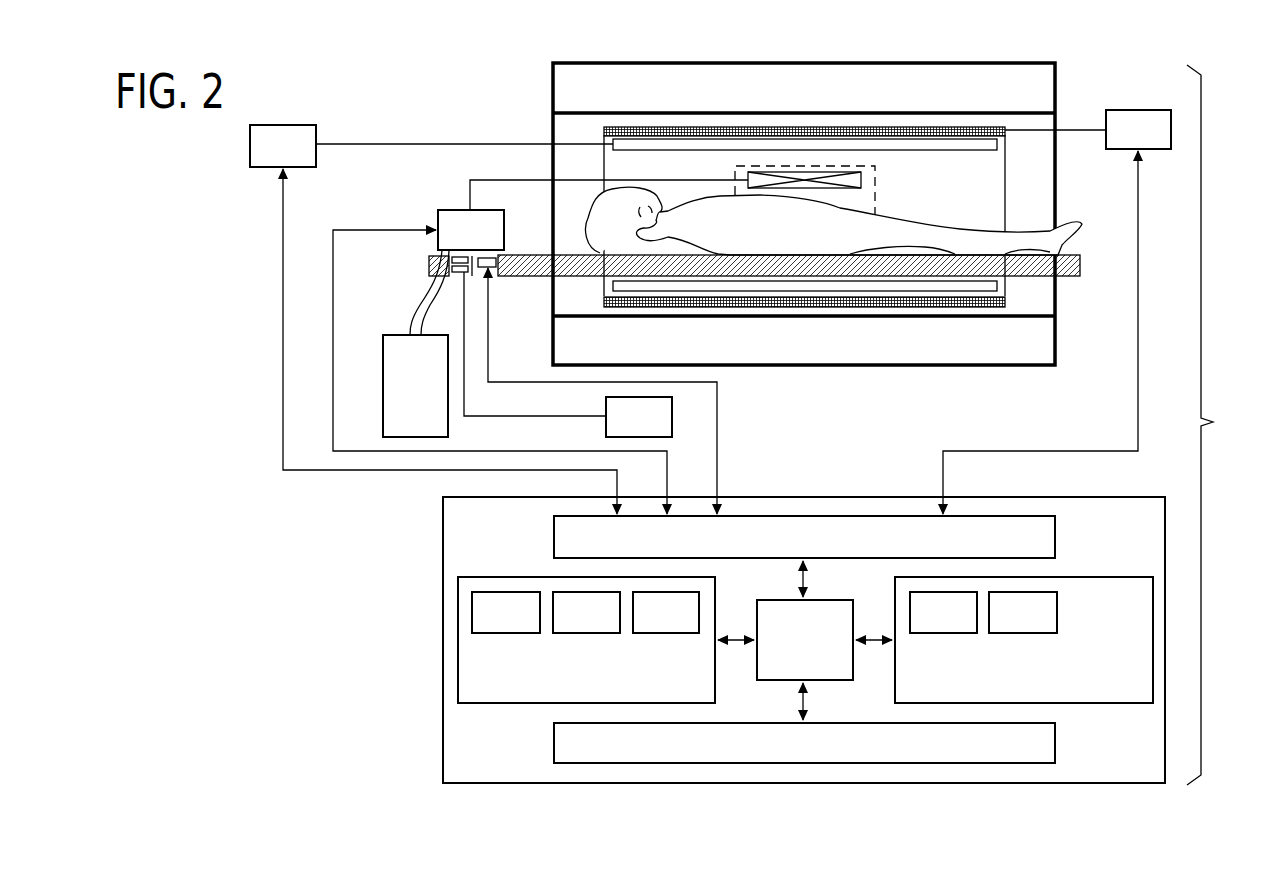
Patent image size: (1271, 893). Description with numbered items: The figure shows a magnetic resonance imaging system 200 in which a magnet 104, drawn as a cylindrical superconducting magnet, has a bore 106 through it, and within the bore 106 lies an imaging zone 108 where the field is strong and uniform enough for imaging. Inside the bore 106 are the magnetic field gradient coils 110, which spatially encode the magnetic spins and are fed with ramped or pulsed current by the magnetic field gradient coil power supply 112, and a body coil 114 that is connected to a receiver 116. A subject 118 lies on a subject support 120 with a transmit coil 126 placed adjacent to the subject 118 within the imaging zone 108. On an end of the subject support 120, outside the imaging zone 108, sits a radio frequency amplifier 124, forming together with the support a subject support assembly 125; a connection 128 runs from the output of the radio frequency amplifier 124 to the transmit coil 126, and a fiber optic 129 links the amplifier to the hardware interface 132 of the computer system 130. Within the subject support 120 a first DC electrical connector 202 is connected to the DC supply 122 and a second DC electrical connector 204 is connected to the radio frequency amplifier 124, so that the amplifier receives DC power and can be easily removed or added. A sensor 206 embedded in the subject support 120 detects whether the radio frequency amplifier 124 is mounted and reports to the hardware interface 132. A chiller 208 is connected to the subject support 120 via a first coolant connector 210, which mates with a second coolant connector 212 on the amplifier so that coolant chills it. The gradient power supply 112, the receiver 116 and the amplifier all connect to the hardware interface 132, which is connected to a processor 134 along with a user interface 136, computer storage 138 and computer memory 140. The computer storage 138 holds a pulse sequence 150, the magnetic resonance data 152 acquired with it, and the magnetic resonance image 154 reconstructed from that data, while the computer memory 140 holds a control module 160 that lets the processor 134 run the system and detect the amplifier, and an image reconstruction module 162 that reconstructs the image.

The magnet 104 is at (1057, 82).
The bore of magnet 106 is at (1032, 163).
The imaging zone 108 is at (878, 197).
The magnetic field gradient coils 110 is at (604, 128).
The magnetic field gradient coil power supply 112 is at (1119, 143).
The body coil 114 is at (626, 148).
The receiver 116 is at (264, 159).
The subject 118 is at (1015, 238).
The subject support 120 is at (1035, 266).
The DC supply 122 is at (620, 430).
The radio frequency amplifier 124 is at (452, 243).
The subject support assembly 125 is at (436, 200).
The transmit coil 126 is at (861, 180).
The connection between amplifier and coil 128 is at (470, 200).
The fiber optic 129 is at (567, 451).
The computer system 130 is at (443, 665).
The hardware interface 132 is at (784, 551).
The processor 134 is at (784, 653).
The user interface 136 is at (784, 758).
The computer storage 138 is at (520, 577).
The computer memory 140 is at (1088, 577).
The pulse sequence 150 is at (487, 626).
The magnetic resonance data 152 is at (567, 626).
The magnetic resonance image 154 is at (647, 626).
The control module 160 is at (924, 626).
The image reconstruction module 162 is at (1004, 626).
The magnetic resonance imaging system 200 is at (1224, 425).
The first DC electrical connector 202 is at (472, 340).
The second DC electrical connector 204 is at (475, 300).
The sensor 206 is at (492, 276).
The chiller 208 is at (396, 400).
The first coolant connector 210 is at (437, 290).
The second coolant connector 212 is at (429, 262).